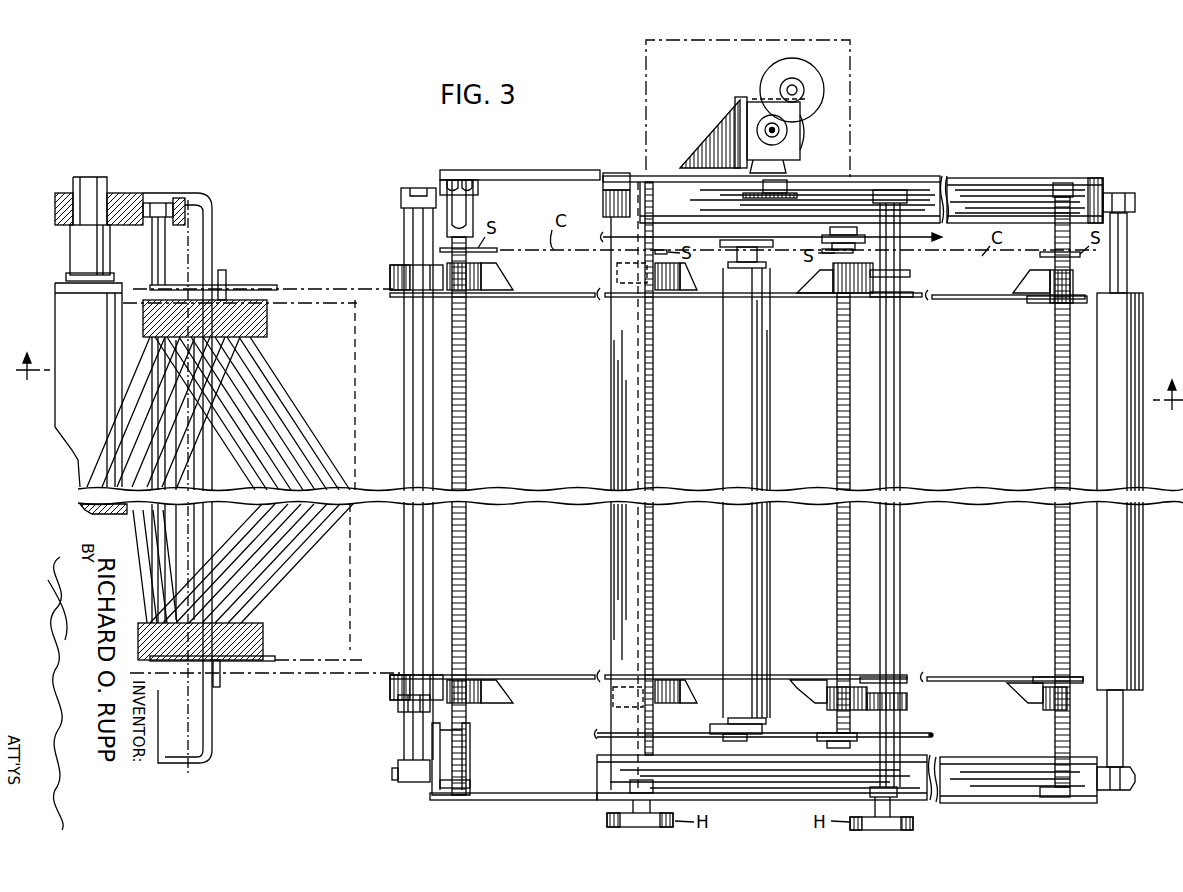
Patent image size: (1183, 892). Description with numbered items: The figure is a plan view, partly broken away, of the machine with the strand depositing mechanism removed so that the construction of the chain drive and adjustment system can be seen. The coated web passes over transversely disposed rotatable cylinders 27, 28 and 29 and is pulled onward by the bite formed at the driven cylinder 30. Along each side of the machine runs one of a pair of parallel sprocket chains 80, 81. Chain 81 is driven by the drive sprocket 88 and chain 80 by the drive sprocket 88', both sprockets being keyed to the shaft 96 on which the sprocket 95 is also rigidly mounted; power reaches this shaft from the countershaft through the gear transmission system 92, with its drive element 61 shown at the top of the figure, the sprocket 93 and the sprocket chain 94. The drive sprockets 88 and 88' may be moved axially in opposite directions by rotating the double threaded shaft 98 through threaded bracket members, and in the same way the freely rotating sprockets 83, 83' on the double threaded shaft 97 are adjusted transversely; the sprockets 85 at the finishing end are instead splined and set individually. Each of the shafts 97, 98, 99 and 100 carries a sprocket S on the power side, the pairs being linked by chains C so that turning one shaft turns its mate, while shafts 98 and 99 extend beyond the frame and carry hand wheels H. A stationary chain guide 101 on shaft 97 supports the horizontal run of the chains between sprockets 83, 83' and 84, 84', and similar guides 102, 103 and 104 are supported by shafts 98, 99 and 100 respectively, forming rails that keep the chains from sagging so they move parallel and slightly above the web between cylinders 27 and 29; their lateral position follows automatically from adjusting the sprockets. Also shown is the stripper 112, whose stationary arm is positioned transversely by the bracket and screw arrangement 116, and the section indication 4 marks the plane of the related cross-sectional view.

The rotatable cylinder 27 is at (1135, 461).
The rotatable cylinder 28 is at (730, 392).
The rotatable cylinder 29 is at (400, 392).
The cylinder 30 is at (90, 336).
The section line 4- 4 is at (599, 368).
The drive pulley 61 is at (800, 93).
The sprocket chain 80 is at (360, 680).
The sprocket chain 81 is at (328, 286).
The sprocket 83 is at (1064, 283).
The sprocket 83' is at (1048, 664).
The sprocket 84 is at (404, 267).
The sprocket 84' is at (399, 666).
The sprocket 85 is at (150, 287).
The drive sprocket 88 is at (906, 301).
The drive sprocket 88' is at (903, 664).
The gear transmission system 92 is at (749, 100).
The sprocket 93 is at (779, 198).
The sprocket chain 94 is at (826, 195).
The sprocket 95 is at (900, 196).
The shaft 96 is at (900, 421).
The double threaded shaft 97 is at (1055, 416).
The double threaded shaft 98 is at (838, 401).
The adjustment shaft 99 is at (655, 386).
The adjustment shaft 100 is at (468, 409).
The chain guide 101 is at (1020, 283).
The chain guide 102 is at (808, 288).
The chain guide 103 is at (685, 281).
The chain guide 104 is at (509, 269).
The stripper 112 is at (275, 655).
The bracket and screw arrangement 116 is at (336, 385).